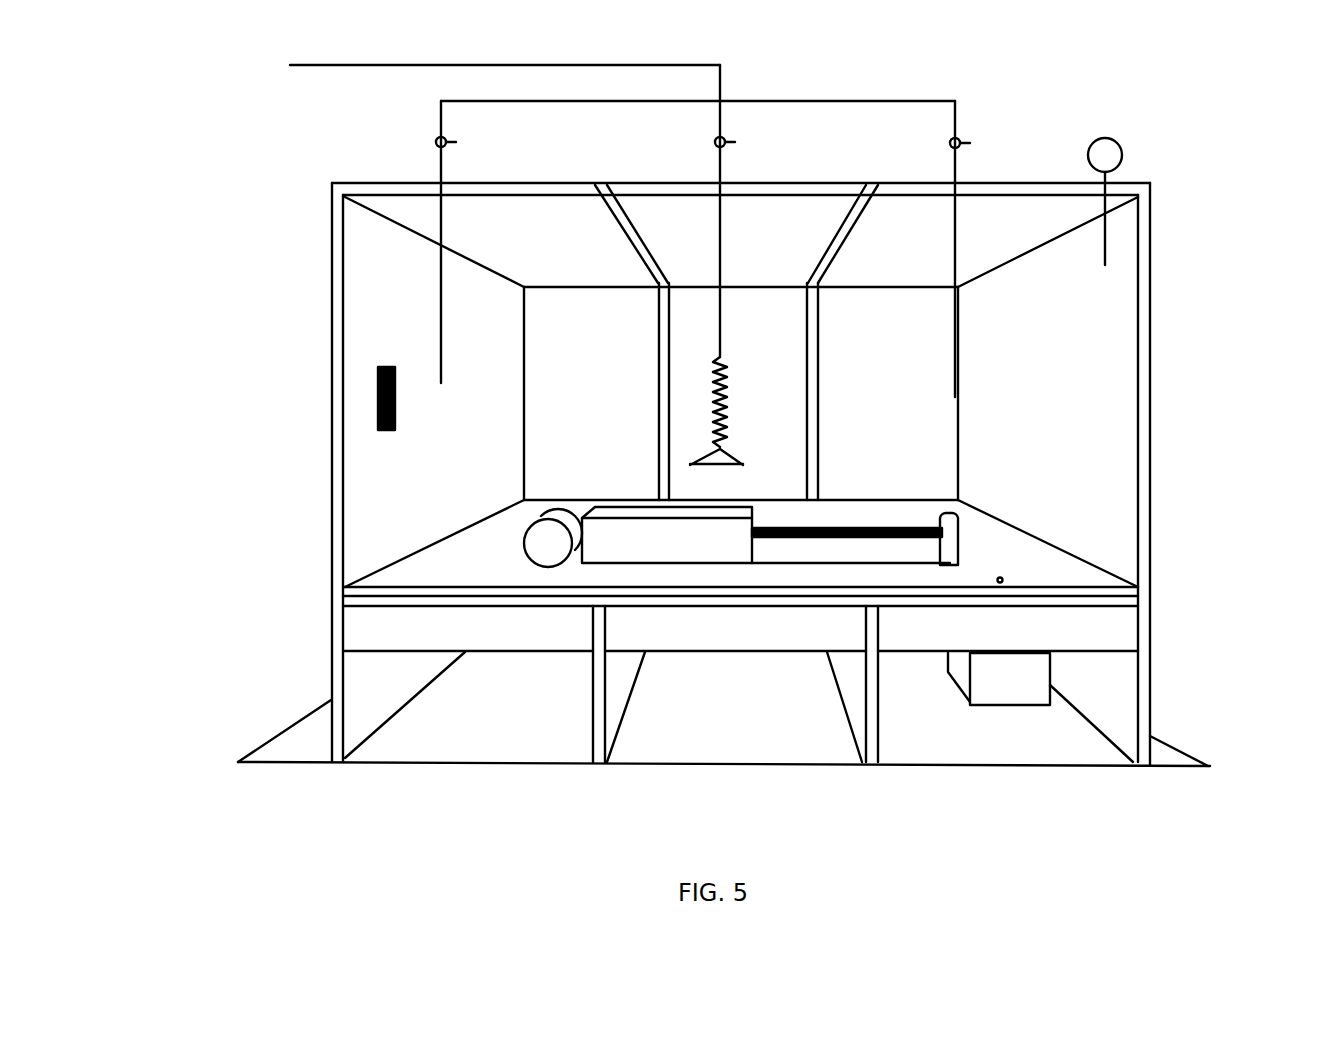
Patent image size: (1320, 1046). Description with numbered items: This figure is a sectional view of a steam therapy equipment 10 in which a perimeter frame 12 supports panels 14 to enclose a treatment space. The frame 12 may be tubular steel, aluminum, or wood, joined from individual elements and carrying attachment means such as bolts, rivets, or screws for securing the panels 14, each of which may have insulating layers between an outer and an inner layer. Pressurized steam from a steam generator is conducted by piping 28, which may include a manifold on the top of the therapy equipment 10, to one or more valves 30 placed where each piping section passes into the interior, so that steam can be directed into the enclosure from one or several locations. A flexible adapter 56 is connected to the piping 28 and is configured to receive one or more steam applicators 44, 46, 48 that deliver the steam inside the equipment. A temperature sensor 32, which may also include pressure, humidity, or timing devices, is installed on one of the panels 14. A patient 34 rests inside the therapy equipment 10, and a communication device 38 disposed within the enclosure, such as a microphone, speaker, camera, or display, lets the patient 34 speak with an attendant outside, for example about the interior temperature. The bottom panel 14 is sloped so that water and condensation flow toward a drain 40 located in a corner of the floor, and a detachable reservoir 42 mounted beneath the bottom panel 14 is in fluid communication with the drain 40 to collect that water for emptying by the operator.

The therapy equipment 10 is at (1052, 89).
The perimeter frame 12 is at (1153, 383).
The panel 14 is at (1118, 312).
The piping 28 is at (348, 65).
The valve 30 is at (722, 138).
The temperature sensor 32 is at (1120, 146).
The patient 34 is at (540, 572).
The communication device 38 is at (377, 408).
The drain 40 is at (1007, 574).
The reservoir 42 is at (1008, 713).
The steam applicator 44 is at (712, 460).
The steam applicator 46 is at (851, 545).
The steam applicator 48 is at (949, 539).
The flexible adapter 56 is at (724, 407).